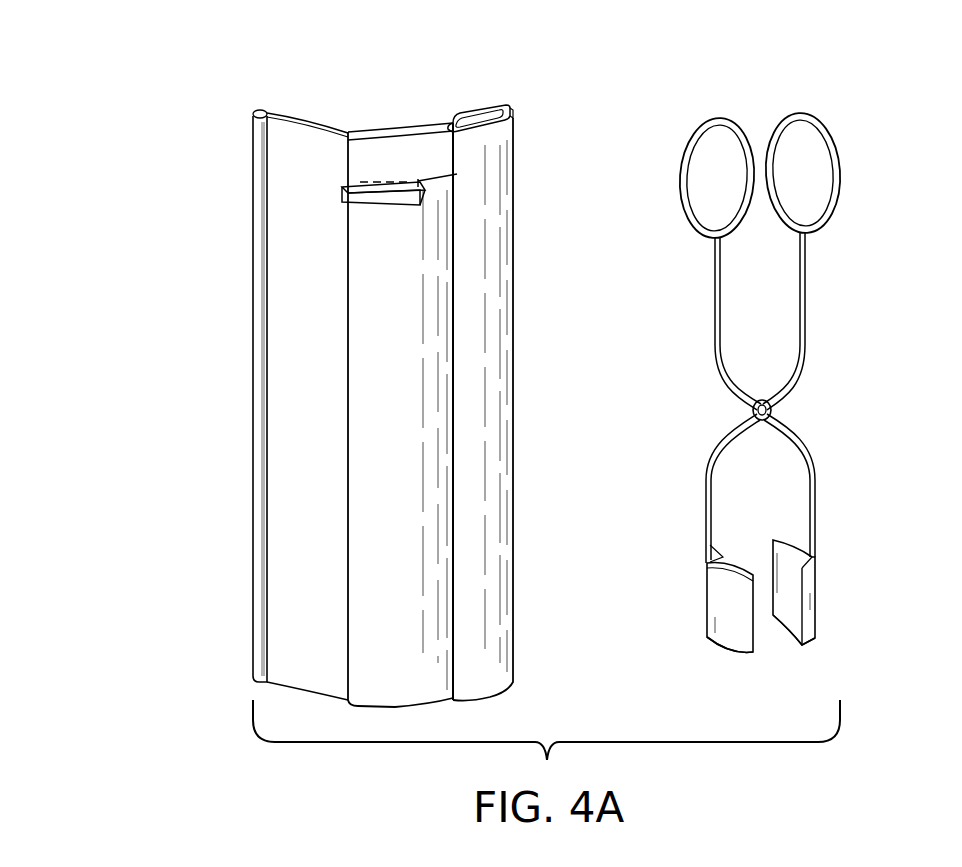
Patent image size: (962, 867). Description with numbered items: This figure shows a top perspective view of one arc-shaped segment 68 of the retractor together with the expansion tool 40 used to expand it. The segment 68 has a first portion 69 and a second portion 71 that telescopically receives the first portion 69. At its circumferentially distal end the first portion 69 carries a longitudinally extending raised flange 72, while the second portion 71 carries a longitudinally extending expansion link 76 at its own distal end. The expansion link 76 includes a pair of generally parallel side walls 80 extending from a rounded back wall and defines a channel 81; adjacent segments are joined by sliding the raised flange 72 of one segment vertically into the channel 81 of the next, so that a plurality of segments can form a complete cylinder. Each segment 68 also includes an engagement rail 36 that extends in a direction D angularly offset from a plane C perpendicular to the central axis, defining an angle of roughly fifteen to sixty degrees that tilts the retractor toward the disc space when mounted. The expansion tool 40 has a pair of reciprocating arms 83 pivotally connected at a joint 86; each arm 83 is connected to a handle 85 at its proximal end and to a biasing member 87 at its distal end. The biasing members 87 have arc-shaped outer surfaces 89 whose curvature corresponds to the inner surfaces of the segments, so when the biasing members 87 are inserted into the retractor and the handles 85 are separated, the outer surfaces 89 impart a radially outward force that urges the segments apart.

The arc-shaped segment 68 is at (222, 317).
The raised flange 72 is at (258, 176).
The first portion 69 is at (282, 443).
The second portion 71 is at (402, 398).
The side wall 80 is at (480, 223).
The expansion link 76 is at (488, 147).
The channel 81 is at (492, 108).
The engagement rail 36 is at (378, 197).
The direction D is at (359, 204).
The plane C is at (393, 182).
The expansion tool 40 is at (890, 184).
The handle 85 is at (720, 118).
The reciprocating arm 83 is at (715, 310).
The joint 86 is at (775, 410).
The arc-shaped outer surface 89 is at (722, 598).
The biasing member 87 is at (753, 652).